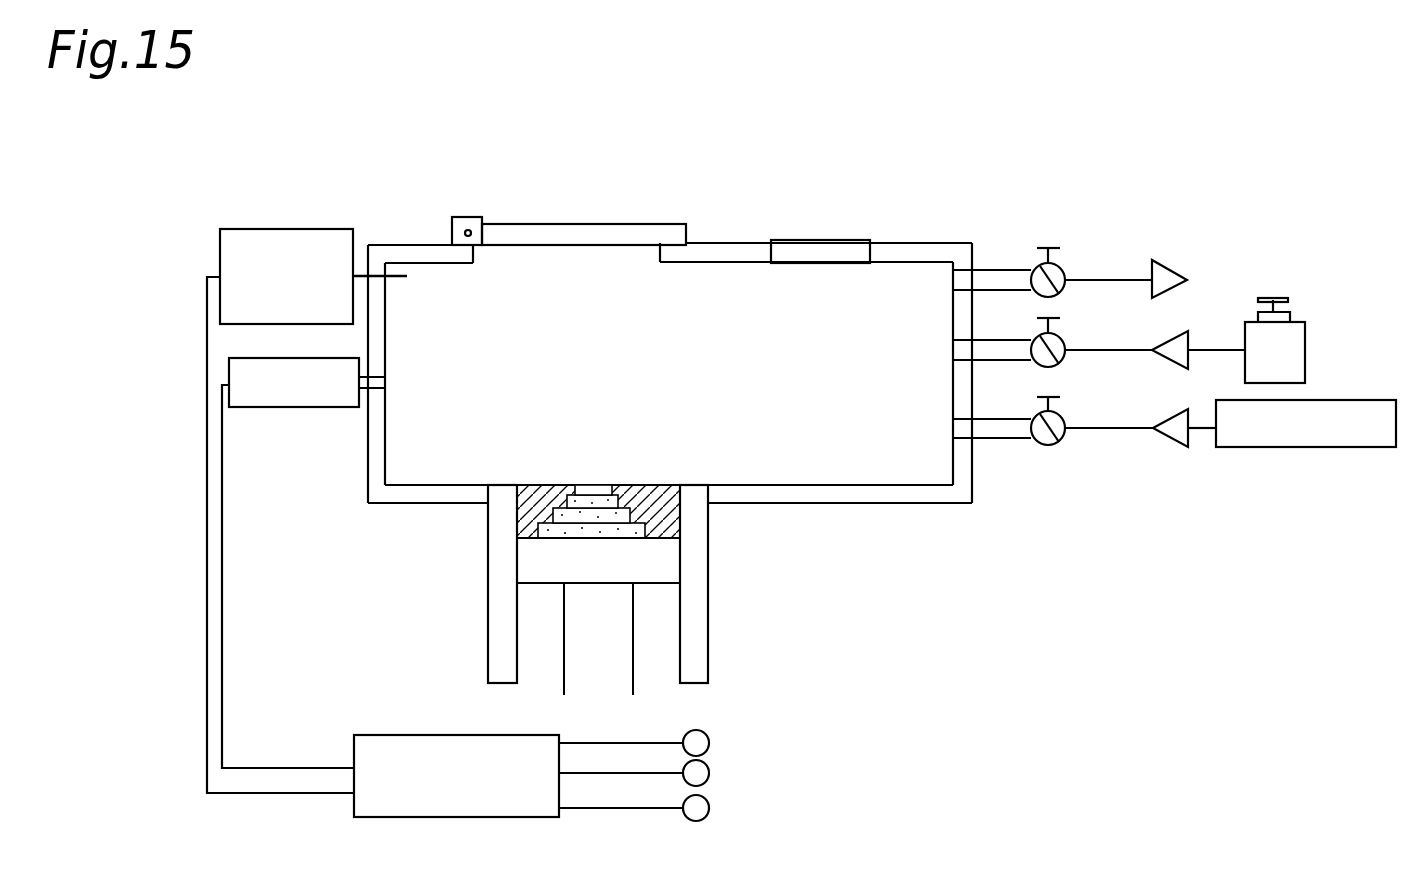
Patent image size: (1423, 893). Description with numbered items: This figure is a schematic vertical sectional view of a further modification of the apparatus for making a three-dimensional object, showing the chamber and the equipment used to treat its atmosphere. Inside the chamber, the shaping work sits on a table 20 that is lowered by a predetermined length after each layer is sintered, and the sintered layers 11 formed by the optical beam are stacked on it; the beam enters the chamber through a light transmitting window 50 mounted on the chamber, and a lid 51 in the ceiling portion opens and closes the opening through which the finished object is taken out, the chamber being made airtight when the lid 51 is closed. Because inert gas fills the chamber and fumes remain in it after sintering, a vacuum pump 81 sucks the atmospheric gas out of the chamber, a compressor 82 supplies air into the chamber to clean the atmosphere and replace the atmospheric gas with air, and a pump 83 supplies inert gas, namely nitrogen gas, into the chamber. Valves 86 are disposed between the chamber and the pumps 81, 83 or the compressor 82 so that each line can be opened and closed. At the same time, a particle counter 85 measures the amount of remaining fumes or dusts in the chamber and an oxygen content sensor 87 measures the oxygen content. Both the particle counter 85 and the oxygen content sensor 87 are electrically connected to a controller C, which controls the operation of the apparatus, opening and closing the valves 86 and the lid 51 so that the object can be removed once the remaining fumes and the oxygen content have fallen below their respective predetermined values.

The sintered layer 11 is at (573, 512).
The table 20 is at (613, 558).
The light transmitting window 50 is at (845, 245).
The lid 51 is at (543, 225).
The vacuum pump 81 is at (1163, 275).
The compressor 82 is at (1295, 447).
The pump 83 is at (1163, 358).
The particle counter 85 is at (300, 402).
The valves 86 is at (1065, 270).
The oxygen content sensor 87 is at (268, 228).
The controller C is at (517, 808).